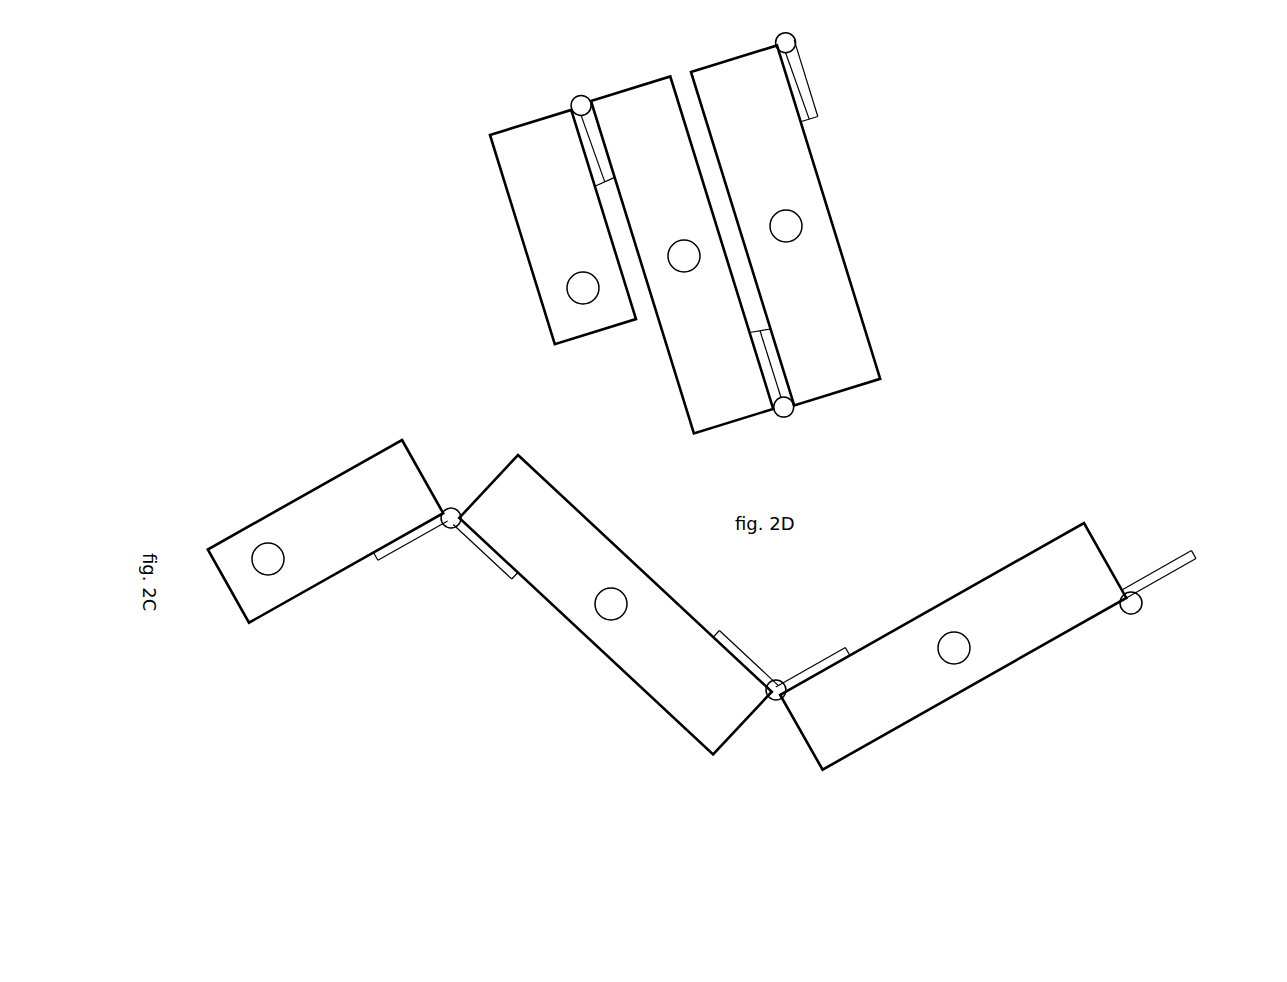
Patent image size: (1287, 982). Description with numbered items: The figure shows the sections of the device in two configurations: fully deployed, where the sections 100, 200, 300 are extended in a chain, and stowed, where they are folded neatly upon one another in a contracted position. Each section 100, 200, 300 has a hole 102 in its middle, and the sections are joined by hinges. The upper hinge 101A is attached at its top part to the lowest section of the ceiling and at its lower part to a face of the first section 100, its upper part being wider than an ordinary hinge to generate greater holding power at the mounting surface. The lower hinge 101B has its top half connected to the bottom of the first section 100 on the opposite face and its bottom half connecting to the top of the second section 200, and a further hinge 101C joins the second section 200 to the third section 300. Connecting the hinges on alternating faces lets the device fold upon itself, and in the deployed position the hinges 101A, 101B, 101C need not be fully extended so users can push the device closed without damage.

In FIG. 2D, the first panel 100 is at (768, 153).
In FIG. 2C, the first panel 100 is at (1036, 607).
In FIG. 2D, the second panel 200 is at (715, 378).
In FIG. 2C, the second panel 200 is at (673, 654).
In FIG. 2D, the third panel 300 is at (555, 211).
In FIG. 2C, the third panel 300 is at (348, 523).
In FIG. 2D, the upper hinge 101A is at (800, 62).
In FIG. 2C, the upper hinge 101A is at (1168, 582).
In FIG. 2D, the lower hinge 101B is at (889, 395).
In FIG. 2C, the lower hinge 101B is at (775, 690).
In FIG. 2D, the third hinge 101C is at (499, 111).
In FIG. 2C, the third hinge 101C is at (483, 542).
In FIG. 2D, the hole 102 is at (578, 291).
In FIG. 2C, the hole 102 is at (267, 565).